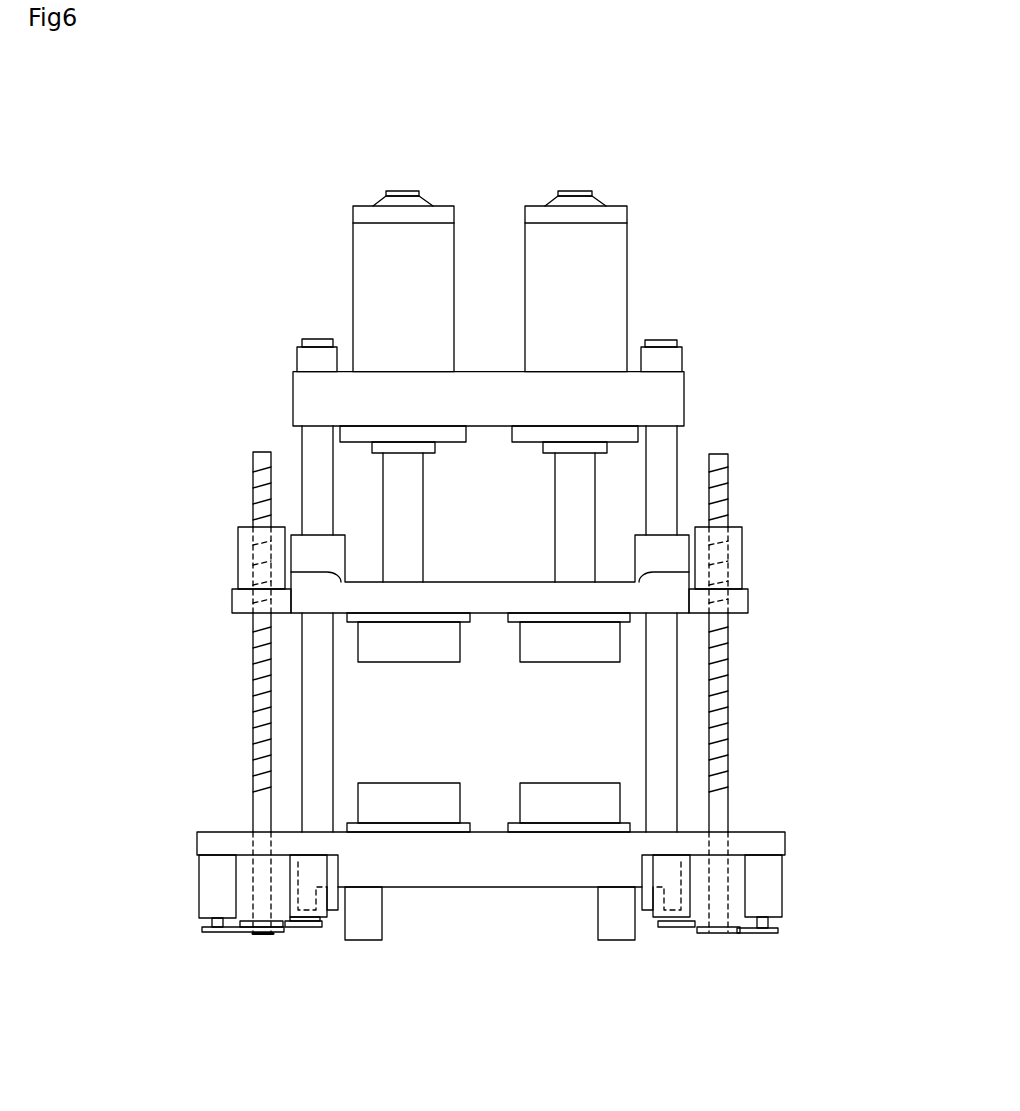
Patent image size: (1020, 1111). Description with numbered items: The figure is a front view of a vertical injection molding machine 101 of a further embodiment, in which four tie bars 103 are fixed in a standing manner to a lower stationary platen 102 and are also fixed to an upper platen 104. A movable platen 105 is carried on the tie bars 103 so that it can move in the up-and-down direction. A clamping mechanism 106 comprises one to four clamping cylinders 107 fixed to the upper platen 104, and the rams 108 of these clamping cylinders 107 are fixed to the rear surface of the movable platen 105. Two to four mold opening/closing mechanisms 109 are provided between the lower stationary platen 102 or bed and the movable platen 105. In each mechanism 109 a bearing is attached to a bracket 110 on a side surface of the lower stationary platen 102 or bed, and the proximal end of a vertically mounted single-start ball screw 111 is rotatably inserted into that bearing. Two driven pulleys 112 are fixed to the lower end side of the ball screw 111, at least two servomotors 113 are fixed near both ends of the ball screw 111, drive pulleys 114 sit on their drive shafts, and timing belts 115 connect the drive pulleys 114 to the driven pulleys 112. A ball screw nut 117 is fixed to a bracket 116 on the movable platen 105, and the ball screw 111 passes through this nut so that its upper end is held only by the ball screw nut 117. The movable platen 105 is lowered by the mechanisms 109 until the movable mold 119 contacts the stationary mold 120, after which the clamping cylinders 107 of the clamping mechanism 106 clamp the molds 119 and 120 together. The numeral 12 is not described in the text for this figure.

The vertical injection molding machine 101 is at (627, 193).
The pressing unit 12 is at (688, 325).
The lower stationary platen 102 is at (543, 857).
The tie bars 103 is at (317, 453).
The upper platen 104 is at (418, 398).
The movable platen 105 is at (607, 600).
The clamping mechanism 106 is at (387, 170).
The clamping cylinders 107 is at (555, 272).
The rams 108 is at (571, 481).
The mold opening/closing mechanisms 109 is at (250, 733).
The bracket 110 is at (243, 843).
The ball screw 111 is at (263, 678).
The driven pulleys 112 is at (290, 930).
The servomotors 113 is at (307, 897).
The drive pulleys 114 is at (218, 930).
The timing belts 115 is at (233, 932).
The bracket 116 is at (243, 600).
The ball screw nut 117 is at (243, 553).
The movable mold 119 is at (557, 640).
The stationary mold 120 is at (570, 803).